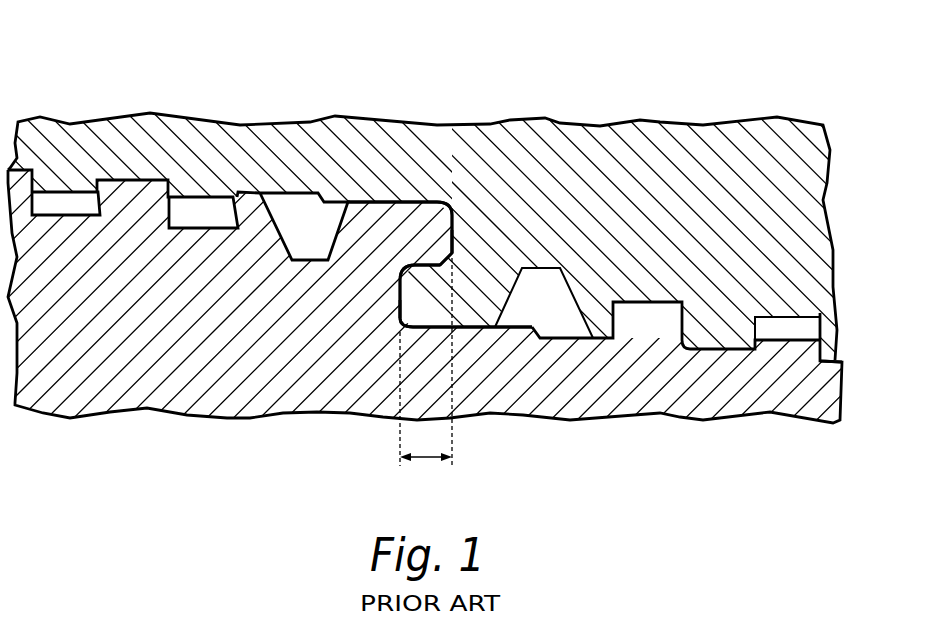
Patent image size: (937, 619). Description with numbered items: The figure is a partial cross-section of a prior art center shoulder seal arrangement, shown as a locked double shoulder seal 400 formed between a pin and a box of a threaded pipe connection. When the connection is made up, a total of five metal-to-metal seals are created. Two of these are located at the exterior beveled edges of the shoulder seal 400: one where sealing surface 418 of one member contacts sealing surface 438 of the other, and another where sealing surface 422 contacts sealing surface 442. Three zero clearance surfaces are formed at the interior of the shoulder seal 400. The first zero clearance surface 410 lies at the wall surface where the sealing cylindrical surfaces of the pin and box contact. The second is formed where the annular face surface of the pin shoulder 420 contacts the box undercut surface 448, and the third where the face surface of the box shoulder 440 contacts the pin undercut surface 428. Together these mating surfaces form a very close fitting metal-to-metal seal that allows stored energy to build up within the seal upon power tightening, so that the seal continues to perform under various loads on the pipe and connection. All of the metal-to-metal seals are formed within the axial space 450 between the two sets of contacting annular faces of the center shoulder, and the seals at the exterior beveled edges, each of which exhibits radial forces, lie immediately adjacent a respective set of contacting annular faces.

The locked double shoulder seal 400 is at (535, 62).
The zero clearance surface 410 is at (400, 290).
The sealing surface 418 is at (436, 210).
The pin shoulder 420 is at (447, 238).
The sealing surface 422 is at (400, 320).
The pin undercut surface 428 is at (400, 300).
The sealing surface 438 is at (448, 208).
The box shoulder 440 is at (408, 293).
The sealing surface 442 is at (412, 312).
The box undercut surface 448 is at (455, 222).
The axial space 450 is at (437, 460).